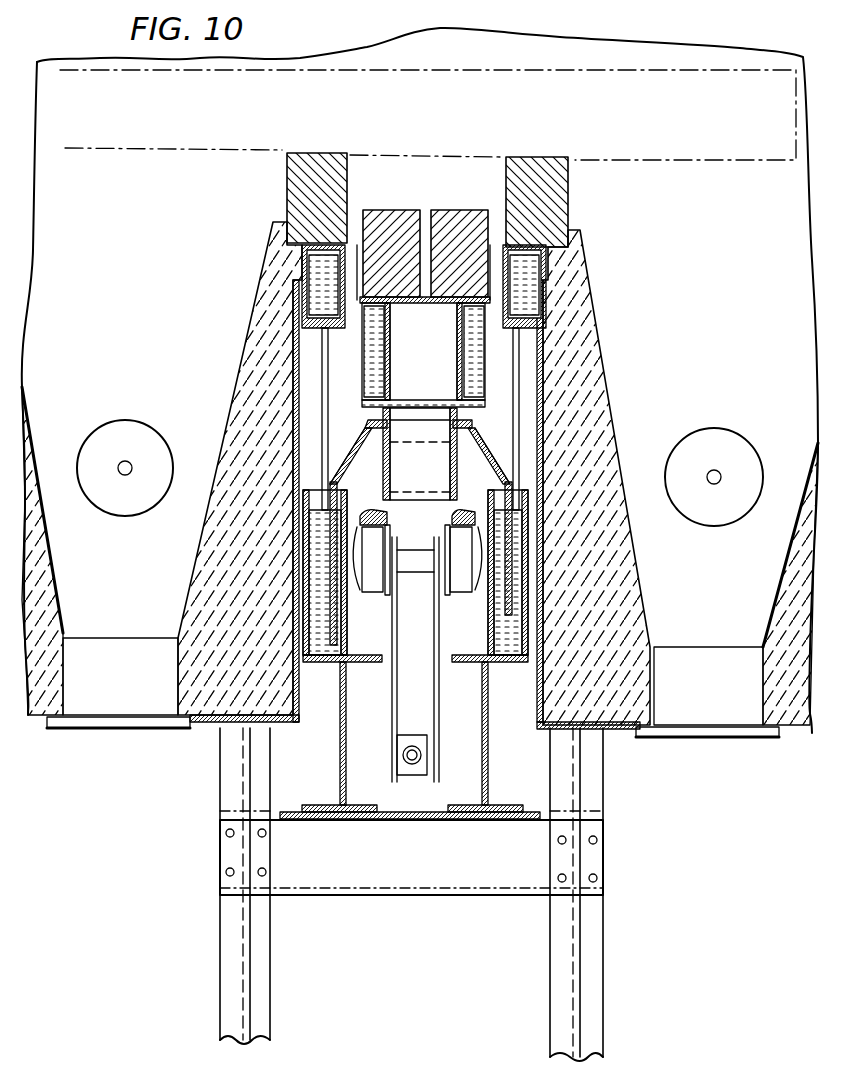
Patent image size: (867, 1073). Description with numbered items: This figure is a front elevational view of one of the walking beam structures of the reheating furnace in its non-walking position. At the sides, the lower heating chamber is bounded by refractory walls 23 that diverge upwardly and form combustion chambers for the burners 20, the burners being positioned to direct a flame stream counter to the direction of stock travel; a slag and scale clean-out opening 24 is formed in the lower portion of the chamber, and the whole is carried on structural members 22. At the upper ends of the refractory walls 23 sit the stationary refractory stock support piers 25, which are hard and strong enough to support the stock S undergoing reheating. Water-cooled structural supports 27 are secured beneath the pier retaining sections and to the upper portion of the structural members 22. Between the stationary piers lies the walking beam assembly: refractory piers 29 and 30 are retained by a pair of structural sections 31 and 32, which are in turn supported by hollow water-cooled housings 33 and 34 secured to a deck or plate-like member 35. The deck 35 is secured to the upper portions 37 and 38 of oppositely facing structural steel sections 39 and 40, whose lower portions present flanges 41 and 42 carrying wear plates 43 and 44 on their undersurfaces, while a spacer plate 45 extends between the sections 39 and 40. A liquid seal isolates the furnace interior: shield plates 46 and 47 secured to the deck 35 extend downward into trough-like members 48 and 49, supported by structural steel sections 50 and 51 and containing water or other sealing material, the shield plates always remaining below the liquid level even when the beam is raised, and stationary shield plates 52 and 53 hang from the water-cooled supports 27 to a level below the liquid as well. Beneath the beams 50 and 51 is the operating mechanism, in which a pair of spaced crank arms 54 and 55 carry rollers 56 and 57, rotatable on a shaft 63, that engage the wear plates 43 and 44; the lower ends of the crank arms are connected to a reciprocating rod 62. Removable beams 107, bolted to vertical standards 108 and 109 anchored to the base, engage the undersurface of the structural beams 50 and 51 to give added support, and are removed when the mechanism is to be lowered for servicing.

The stock S is at (610, 134).
The burner 20 is at (127, 516).
The structural member 22 is at (288, 727).
The refractory wall 23 is at (242, 379).
The slag and scale clean-out opening 24 is at (110, 703).
The stationary refractory stock support pier 25 is at (287, 190).
The water-cooled structural support 27 is at (336, 330).
The refractory pier 29 is at (383, 210).
The refractory pier 30 is at (453, 210).
The structural section 31 is at (362, 298).
The structural section 32 is at (486, 298).
The water-cooled housing 33 is at (393, 345).
The water-cooled housing 34 is at (463, 338).
The deck or plate-like member 35 is at (425, 404).
The upper portion of structural steel section 37 is at (378, 438).
The upper portion of structural steel section 38 is at (463, 430).
The structural steel section 39 is at (386, 472).
The structural steel section 40 is at (455, 484).
The flange 41 is at (388, 507).
The flange 42 is at (466, 516).
The wear plate 43 is at (375, 594).
The wear plate 44 is at (466, 594).
The spacer plate 45 is at (432, 480).
The shield plate 46 is at (350, 463).
The shield plate 47 is at (490, 457).
The trough-like member 48 is at (326, 656).
The trough-like member 49 is at (505, 666).
The structural steel section 50 is at (338, 750).
The structural steel section 51 is at (488, 762).
The stationary shield plate 52 is at (330, 418).
The stationary shield plate 53 is at (514, 416).
The crank arm 54 is at (391, 700).
The crank arm 55 is at (439, 707).
The roller 56 is at (360, 590).
The roller 57 is at (475, 590).
The reciprocating rod 62 is at (410, 735).
The shaft 63 is at (420, 564).
The removable beam 107 is at (387, 880).
The vertical standard 108 is at (602, 990).
The vertical standard 109 is at (218, 966).